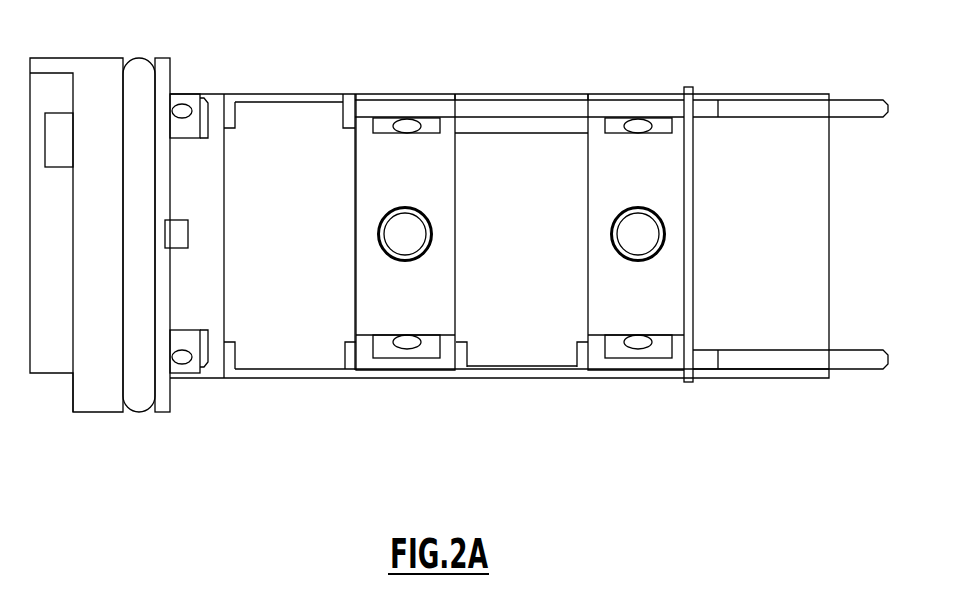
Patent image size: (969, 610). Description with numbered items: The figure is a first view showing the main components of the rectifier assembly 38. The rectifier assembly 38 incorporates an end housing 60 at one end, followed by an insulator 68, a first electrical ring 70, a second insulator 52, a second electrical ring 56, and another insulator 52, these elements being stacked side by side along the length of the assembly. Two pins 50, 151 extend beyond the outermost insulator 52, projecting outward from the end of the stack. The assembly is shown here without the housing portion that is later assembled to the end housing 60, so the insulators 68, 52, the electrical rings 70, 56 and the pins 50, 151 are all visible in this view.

The rectifier assembly 38 is at (593, 455).
The pin 50 is at (762, 97).
The insulator 52 is at (415, 320).
The second electrical ring 56 is at (483, 155).
The end housing 60 is at (93, 73).
The insulator 68 is at (207, 367).
The first electrical ring 70 is at (294, 122).
The pin 151 is at (763, 348).